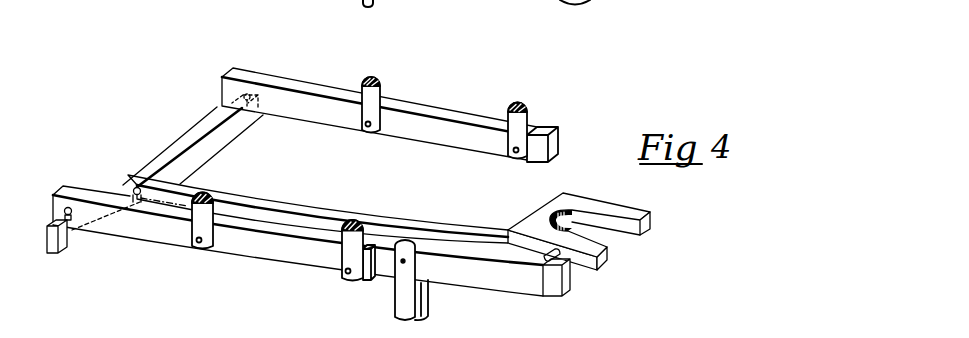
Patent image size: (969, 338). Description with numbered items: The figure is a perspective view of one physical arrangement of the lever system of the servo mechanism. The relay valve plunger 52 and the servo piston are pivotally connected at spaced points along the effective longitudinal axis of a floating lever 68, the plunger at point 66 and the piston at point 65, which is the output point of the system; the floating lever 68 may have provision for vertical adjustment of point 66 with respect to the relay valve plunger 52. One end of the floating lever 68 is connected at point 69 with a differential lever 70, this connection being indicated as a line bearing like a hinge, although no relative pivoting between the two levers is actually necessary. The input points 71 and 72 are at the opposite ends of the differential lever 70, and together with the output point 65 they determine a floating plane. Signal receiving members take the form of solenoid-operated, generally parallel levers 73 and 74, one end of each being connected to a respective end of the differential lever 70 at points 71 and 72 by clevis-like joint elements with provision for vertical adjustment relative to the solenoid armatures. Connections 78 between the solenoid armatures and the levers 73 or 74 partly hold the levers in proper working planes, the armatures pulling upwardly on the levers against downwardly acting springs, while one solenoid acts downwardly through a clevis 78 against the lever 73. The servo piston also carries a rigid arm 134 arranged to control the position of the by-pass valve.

The relay valve plunger 52 is at (429, 303).
The output point 65 is at (550, 261).
The connection point of relay valve plunger 66 is at (406, 261).
The floating lever 68 is at (280, 207).
The pivotal connection point 69 is at (138, 187).
The differential lever 70 is at (219, 139).
The input point 71 is at (248, 91).
The input point 72 is at (72, 222).
The solenoid-operated lever 73 is at (418, 112).
The solenoid-operated lever 74 is at (264, 257).
The clevis connection 78 is at (366, 127).
The rigid arm 134 is at (628, 236).